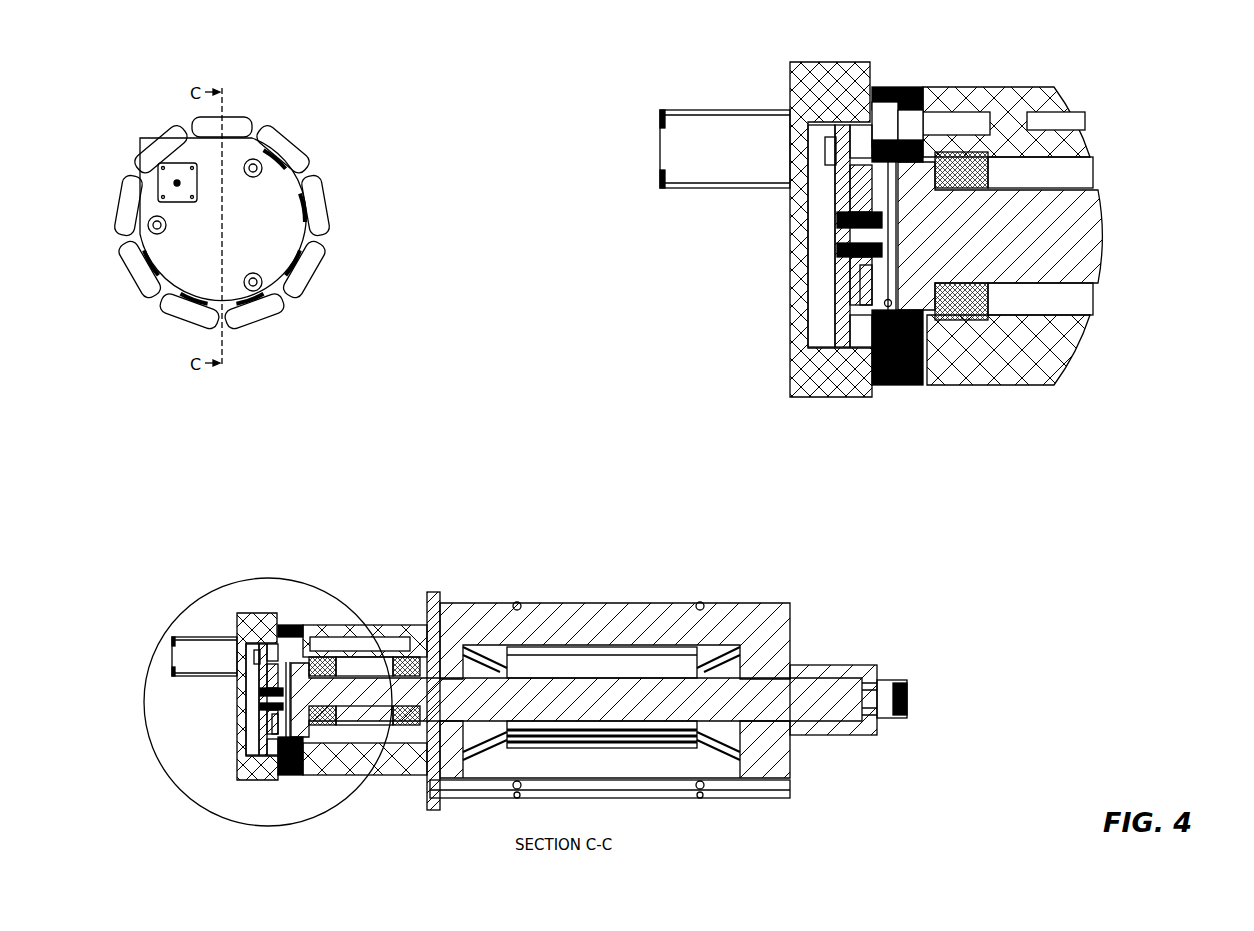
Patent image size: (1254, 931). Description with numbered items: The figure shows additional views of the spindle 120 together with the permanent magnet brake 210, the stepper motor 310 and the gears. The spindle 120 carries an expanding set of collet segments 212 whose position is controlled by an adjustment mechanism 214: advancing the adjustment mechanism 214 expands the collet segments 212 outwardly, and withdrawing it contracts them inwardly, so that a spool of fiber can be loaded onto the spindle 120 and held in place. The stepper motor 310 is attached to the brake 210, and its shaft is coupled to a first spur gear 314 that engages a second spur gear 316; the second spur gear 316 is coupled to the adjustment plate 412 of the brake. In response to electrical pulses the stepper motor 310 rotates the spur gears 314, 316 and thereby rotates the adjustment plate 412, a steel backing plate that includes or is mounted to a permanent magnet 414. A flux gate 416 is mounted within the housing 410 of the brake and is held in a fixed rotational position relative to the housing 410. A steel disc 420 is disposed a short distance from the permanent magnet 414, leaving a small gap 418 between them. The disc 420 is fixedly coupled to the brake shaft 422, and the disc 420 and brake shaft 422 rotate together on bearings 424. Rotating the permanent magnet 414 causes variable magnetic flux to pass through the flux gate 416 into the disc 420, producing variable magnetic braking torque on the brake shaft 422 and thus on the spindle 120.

The spindle 120 is at (347, 133).
The collet segments 212 is at (310, 260).
The stepper motor 310 is at (177, 183).
The permanent magnet brake 210 is at (1149, 229).
The housing 410 is at (985, 108).
The bearings 424 is at (985, 300).
The brake shaft 422 is at (1012, 245).
The gap 418 is at (887, 385).
The adjustment plate 412 is at (852, 273).
The first spur gear 314 is at (832, 143).
The second spur gear 316 is at (848, 190).
The flux gate 416 is at (883, 253).
The permanent magnet 414 is at (867, 285).
The disc 420 is at (895, 310).
The adjustment mechanism 214 is at (920, 697).